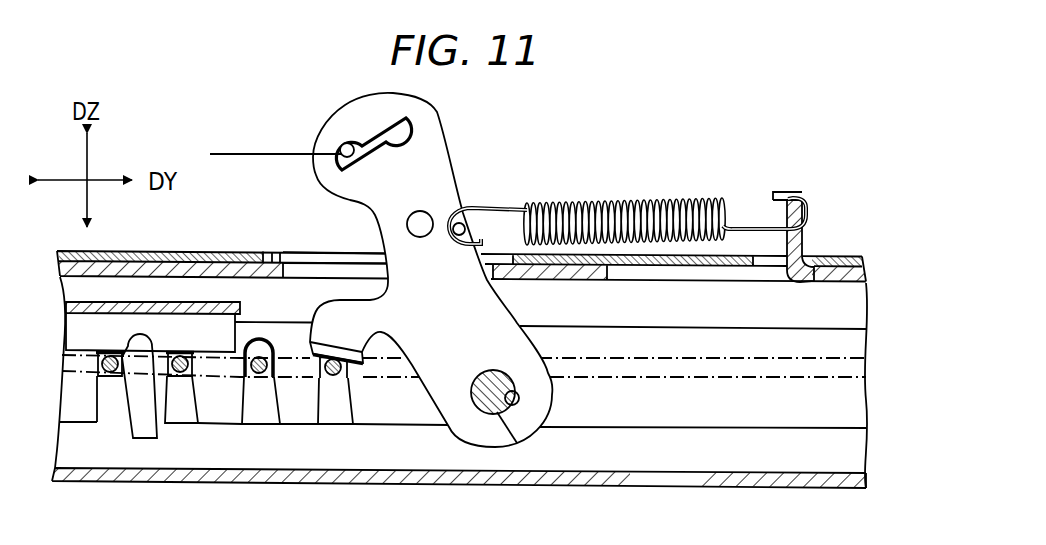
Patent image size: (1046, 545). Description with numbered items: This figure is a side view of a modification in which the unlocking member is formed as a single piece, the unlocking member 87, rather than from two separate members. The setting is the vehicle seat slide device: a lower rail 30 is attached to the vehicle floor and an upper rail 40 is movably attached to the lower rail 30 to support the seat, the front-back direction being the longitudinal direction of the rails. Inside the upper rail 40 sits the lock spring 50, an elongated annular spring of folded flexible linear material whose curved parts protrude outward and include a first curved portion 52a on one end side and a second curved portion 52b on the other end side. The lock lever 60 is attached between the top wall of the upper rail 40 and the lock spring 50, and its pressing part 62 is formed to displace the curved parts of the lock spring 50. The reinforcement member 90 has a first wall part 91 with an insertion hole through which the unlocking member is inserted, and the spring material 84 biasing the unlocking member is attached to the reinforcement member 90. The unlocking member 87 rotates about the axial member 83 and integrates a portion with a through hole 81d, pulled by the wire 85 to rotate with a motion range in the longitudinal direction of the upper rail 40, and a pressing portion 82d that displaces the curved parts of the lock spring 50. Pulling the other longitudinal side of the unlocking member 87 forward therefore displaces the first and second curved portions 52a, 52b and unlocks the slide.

The lower rail 30 is at (120, 481).
The upper rail 40 is at (143, 249).
The lock spring 50 is at (787, 378).
The first curved portion 52a is at (108, 377).
The second curved portion 52b is at (257, 378).
The lock lever 60 is at (153, 302).
The pressing part 62 is at (220, 355).
The through hole 81d is at (350, 140).
The pressing portion 82d is at (520, 395).
The axial member 83 is at (517, 443).
The spring material 84 is at (697, 198).
The wire 85 is at (277, 154).
The unlocking member 87 is at (442, 130).
The reinforcement member 90 is at (283, 253).
The first wall part 91 is at (273, 253).